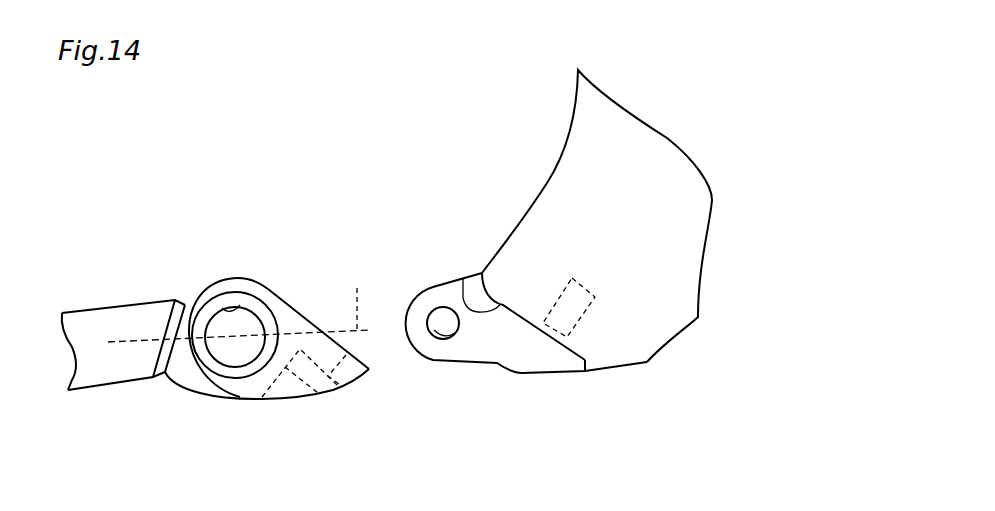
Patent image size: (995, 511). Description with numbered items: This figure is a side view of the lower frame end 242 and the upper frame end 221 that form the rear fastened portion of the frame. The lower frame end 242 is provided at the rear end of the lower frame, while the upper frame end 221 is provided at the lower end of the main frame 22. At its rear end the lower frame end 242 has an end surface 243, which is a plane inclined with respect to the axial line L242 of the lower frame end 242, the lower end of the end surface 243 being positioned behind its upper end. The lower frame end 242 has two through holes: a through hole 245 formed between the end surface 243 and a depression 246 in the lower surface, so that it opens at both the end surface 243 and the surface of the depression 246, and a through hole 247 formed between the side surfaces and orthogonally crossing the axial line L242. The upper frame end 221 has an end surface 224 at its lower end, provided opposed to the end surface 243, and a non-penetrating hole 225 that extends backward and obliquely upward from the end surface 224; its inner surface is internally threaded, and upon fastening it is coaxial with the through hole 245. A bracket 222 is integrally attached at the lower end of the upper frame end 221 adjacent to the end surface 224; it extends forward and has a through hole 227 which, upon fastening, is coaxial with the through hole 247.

The main frame 22 is at (698, 223).
The upper frame end 221 is at (615, 371).
The bracket 222 is at (432, 293).
The end surface 224 is at (463, 280).
The non-penetrating hole 225 is at (541, 324).
The through hole 227 is at (440, 338).
The lower frame end 242 is at (240, 400).
The end surface 243 is at (295, 308).
The through hole 245 is at (319, 346).
The depression 246 is at (280, 368).
The through hole 247 is at (222, 308).
The axial line L242 is at (247, 300).